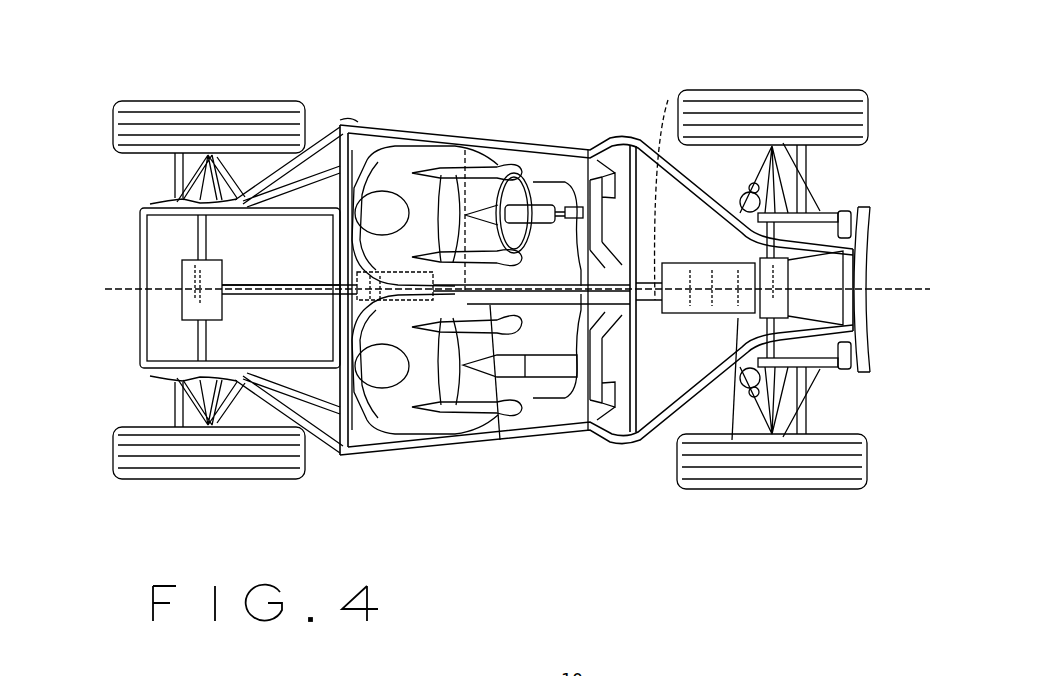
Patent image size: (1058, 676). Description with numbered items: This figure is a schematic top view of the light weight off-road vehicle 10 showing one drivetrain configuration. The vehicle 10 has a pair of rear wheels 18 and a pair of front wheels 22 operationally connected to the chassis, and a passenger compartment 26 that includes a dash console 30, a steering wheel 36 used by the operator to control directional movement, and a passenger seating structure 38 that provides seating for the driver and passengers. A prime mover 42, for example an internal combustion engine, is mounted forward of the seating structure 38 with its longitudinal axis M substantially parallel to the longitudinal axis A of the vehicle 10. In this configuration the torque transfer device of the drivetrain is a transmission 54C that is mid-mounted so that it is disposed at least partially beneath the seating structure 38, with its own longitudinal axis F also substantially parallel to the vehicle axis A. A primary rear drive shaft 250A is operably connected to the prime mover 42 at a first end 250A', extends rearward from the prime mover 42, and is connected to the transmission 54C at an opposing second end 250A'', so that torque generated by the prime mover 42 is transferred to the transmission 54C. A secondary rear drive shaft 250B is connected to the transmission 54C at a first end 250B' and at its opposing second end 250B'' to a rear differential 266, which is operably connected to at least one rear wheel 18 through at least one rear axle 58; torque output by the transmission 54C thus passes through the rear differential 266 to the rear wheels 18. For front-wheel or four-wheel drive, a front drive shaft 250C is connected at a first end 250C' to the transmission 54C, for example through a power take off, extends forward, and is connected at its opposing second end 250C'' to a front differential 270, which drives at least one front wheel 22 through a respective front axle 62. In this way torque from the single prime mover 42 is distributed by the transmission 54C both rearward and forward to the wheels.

The off-road vehicle 10 is at (503, 46).
The rear wheels 18 is at (197, 123).
The front wheels 22 is at (757, 97).
The passenger compartment 26 is at (480, 460).
The dash console 30 is at (628, 138).
The steering wheel 36 is at (548, 172).
The passenger seating structure 38 is at (367, 167).
The prime mover 42 is at (703, 278).
The transmission 54C is at (334, 122).
The rear axle 58 is at (200, 395).
The front axle 62 is at (810, 180).
The rear differential 266 is at (188, 305).
The front differential 270 is at (773, 277).
The primary rear drive shaft 250A is at (531, 386).
The first end of primary rear drive shaft 250A' is at (687, 168).
The second end of primary rear drive shaft 250A'' is at (469, 180).
The secondary rear drive shaft 250B is at (289, 308).
The first end of secondary rear drive shaft 250B' is at (340, 266).
The second end of secondary rear drive shaft 250B'' is at (199, 252).
The front drive shaft 250C is at (665, 323).
The first end of front drive shaft 250C' is at (525, 421).
The second end of front drive shaft 250C'' is at (690, 422).
The longitudinal axis of the vehicle A is at (518, 290).
The longitudinal axis of the transmission F is at (336, 340).
The longitudinal axis of the prime mover M is at (722, 262).